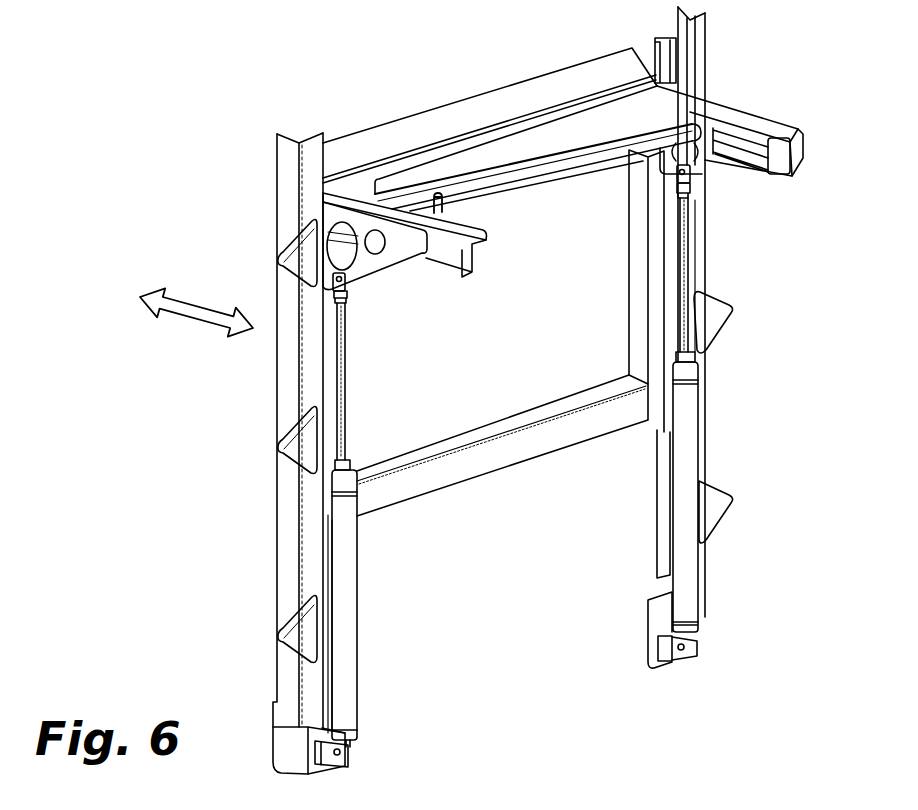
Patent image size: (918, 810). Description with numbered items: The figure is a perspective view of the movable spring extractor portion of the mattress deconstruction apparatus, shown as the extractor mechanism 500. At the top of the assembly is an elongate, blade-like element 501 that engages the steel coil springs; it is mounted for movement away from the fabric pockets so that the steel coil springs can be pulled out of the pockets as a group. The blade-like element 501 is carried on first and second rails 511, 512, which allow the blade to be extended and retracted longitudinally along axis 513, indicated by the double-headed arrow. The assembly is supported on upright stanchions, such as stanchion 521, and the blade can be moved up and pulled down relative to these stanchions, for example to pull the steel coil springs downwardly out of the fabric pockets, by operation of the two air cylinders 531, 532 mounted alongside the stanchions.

The extractor mechanism 500 is at (185, 191).
The elongate blade-like element 501 is at (505, 155).
The first rail 511 is at (737, 117).
The second rail 512 is at (438, 245).
The axis 513 is at (200, 321).
The stanchion 521 is at (656, 52).
The air cylinder 531 is at (690, 452).
The air cylinder 532 is at (345, 580).